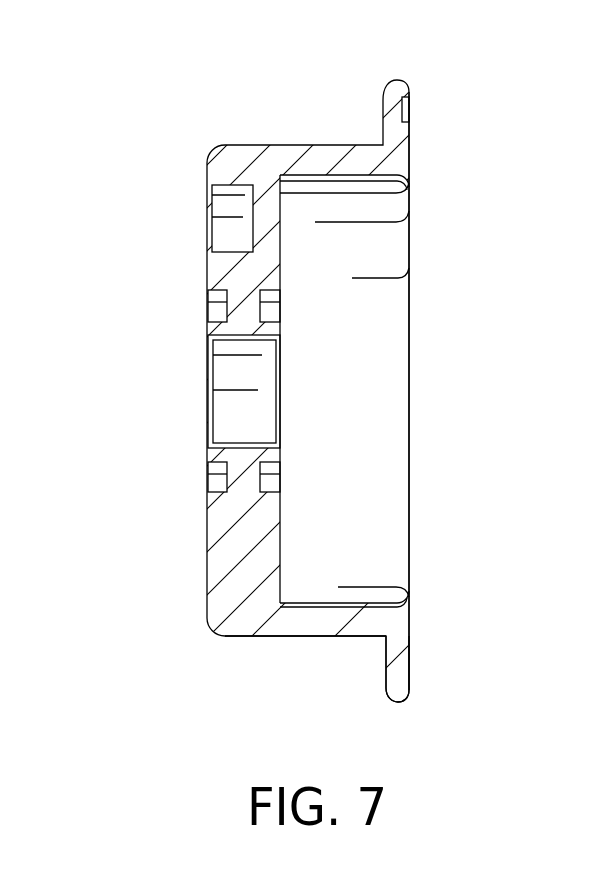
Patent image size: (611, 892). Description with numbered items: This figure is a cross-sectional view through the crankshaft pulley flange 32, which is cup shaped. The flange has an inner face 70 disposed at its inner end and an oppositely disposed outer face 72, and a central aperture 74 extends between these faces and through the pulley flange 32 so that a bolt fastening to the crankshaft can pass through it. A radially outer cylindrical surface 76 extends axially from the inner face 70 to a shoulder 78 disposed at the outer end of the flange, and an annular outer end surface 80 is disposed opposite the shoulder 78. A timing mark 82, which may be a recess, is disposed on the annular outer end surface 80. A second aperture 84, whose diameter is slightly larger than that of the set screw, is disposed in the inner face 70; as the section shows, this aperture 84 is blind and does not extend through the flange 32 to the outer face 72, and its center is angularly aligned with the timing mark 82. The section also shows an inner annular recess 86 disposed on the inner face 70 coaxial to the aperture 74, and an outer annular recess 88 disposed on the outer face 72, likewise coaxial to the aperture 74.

The crankshaft pulley flange 32 is at (203, 148).
The inner face 70 is at (208, 523).
The outer face 72 is at (282, 506).
The aperture 74 is at (230, 418).
The radially outer cylindrical surface 76 is at (278, 637).
The shoulder 78 is at (388, 678).
The annular outer end surface 80 is at (412, 673).
The timing mark 82 is at (408, 110).
The aperture 84 is at (222, 235).
The inner annular recess 86 is at (215, 310).
The outer annular recess 88 is at (272, 311).